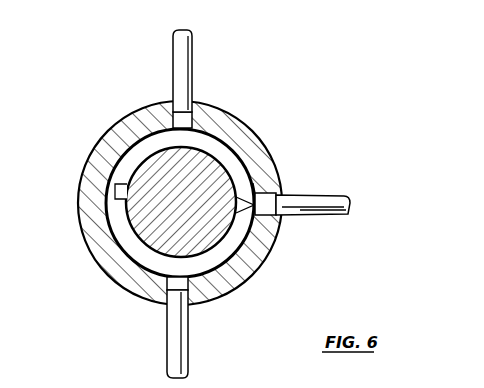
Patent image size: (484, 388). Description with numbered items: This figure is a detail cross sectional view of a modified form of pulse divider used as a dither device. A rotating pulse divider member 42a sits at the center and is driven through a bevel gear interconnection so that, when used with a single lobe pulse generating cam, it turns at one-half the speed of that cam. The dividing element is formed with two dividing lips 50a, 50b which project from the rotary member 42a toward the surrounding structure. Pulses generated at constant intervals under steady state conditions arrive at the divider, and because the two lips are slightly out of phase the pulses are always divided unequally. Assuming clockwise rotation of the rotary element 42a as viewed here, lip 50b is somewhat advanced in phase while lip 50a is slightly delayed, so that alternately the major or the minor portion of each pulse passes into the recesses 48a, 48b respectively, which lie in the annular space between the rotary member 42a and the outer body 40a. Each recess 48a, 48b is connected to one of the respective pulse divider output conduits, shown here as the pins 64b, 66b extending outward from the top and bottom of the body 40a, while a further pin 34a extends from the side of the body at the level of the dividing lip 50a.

The side pin 34a is at (306, 206).
The outer sleeve 40a is at (226, 116).
The rotating pulse divider member 42a is at (127, 210).
The recess 48a is at (229, 169).
The recess 48b is at (222, 256).
The dividing lip 50a is at (254, 181).
The dividing lip 50b is at (118, 186).
The top pin 64b is at (193, 48).
The bottom pin 66b is at (178, 357).